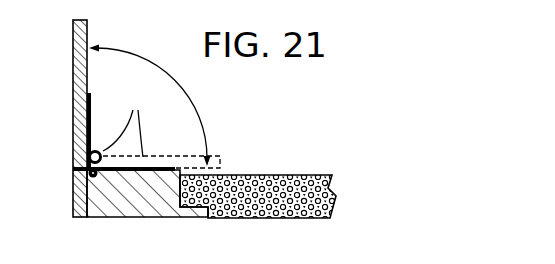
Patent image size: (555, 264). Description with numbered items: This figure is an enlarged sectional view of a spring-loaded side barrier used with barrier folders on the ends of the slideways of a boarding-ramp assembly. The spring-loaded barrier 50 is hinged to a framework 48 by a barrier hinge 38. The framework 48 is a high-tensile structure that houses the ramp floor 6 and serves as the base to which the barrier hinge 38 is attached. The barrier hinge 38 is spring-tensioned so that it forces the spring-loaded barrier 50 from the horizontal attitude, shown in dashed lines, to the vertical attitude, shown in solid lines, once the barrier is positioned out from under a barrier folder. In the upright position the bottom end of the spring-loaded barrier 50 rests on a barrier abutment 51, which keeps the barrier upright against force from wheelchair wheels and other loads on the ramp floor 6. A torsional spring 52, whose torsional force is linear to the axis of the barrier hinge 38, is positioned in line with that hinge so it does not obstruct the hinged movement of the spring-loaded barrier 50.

The spring-loaded barrier 50 is at (73, 28).
The barrier abutment 51 is at (73, 193).
The ramp floor 6 is at (297, 175).
The framework 48 is at (183, 190).
The torsional spring 52 is at (91, 121).
The barrier hinge 38 is at (89, 157).